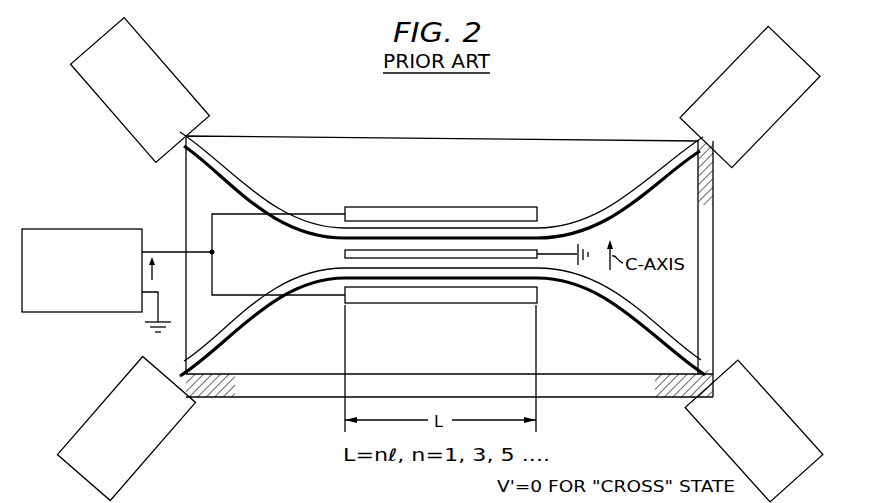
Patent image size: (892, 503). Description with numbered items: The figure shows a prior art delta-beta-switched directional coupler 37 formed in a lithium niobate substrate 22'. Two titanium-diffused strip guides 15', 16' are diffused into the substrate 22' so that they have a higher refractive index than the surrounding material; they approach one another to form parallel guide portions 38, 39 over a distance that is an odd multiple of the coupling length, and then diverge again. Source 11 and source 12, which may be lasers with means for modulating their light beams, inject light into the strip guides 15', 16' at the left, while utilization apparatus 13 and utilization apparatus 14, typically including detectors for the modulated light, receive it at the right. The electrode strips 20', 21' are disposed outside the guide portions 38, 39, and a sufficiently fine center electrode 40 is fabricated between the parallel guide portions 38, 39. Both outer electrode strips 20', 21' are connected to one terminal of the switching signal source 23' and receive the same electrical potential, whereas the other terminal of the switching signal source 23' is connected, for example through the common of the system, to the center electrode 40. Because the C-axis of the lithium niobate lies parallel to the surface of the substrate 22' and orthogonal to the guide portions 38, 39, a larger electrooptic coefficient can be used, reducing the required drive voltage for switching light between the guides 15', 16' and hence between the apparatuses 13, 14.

The source 11 is at (108, 112).
The source 12 is at (95, 403).
The utilization apparatus 13 is at (775, 128).
The utilization apparatus 14 is at (782, 403).
The strip guide 15' is at (441, 185).
The strip guide 16' is at (442, 322).
The electrode strip 20' is at (496, 194).
The electrode strip 21' is at (490, 319).
The substrate 22' is at (449, 292).
The switching signal source 23' is at (183, 264).
The switched directional coupler 37 is at (451, 167).
The parallel guide portion 38 is at (441, 204).
The parallel guide portion 39 is at (441, 312).
The center electrode 40 is at (345, 254).